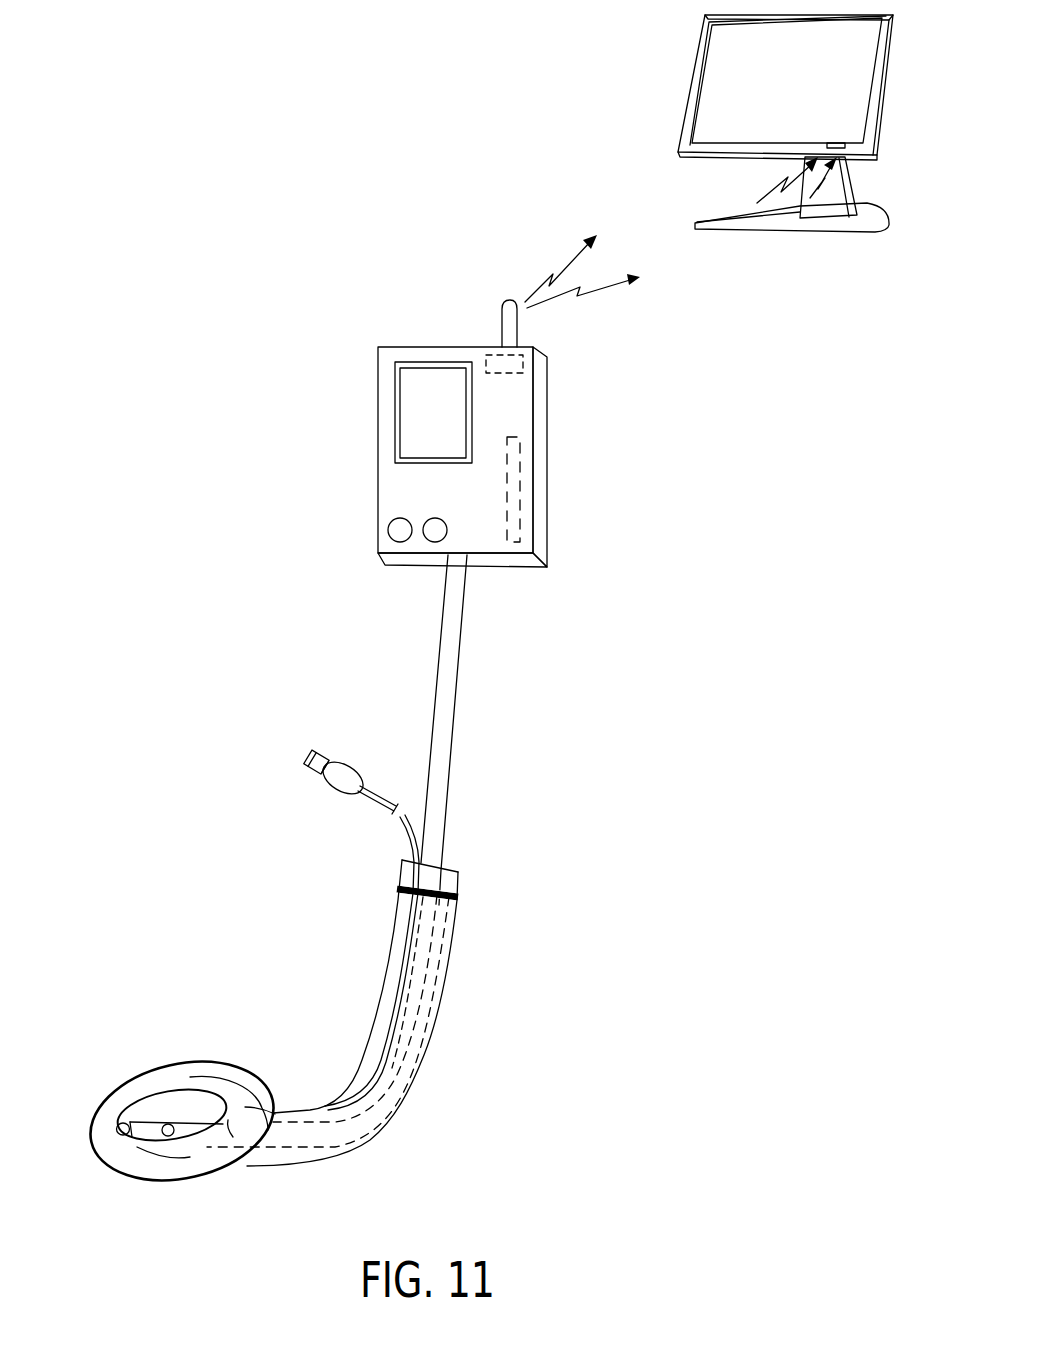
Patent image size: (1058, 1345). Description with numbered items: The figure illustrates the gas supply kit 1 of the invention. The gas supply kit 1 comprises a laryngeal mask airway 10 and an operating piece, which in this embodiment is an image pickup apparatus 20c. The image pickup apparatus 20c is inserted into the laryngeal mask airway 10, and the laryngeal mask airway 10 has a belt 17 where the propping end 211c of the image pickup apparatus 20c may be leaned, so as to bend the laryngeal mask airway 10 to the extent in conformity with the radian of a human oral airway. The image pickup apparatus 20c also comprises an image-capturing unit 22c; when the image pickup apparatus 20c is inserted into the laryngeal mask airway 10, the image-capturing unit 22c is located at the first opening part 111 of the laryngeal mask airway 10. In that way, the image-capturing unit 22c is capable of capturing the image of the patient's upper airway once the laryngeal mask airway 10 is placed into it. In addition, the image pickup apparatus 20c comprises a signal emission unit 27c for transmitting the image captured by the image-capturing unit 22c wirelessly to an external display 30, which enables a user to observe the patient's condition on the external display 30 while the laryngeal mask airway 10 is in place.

The gas supply kit 1 is at (258, 318).
The laryngeal mask airway 10 is at (505, 993).
The belt 17 is at (119, 1123).
The image pickup apparatus 20c is at (535, 606).
The image-capturing unit 22c is at (168, 1124).
The signal emission unit 27c is at (505, 313).
The external display 30 is at (715, 90).
The first opening part 111 is at (198, 1110).
The propping end 211c is at (147, 1123).